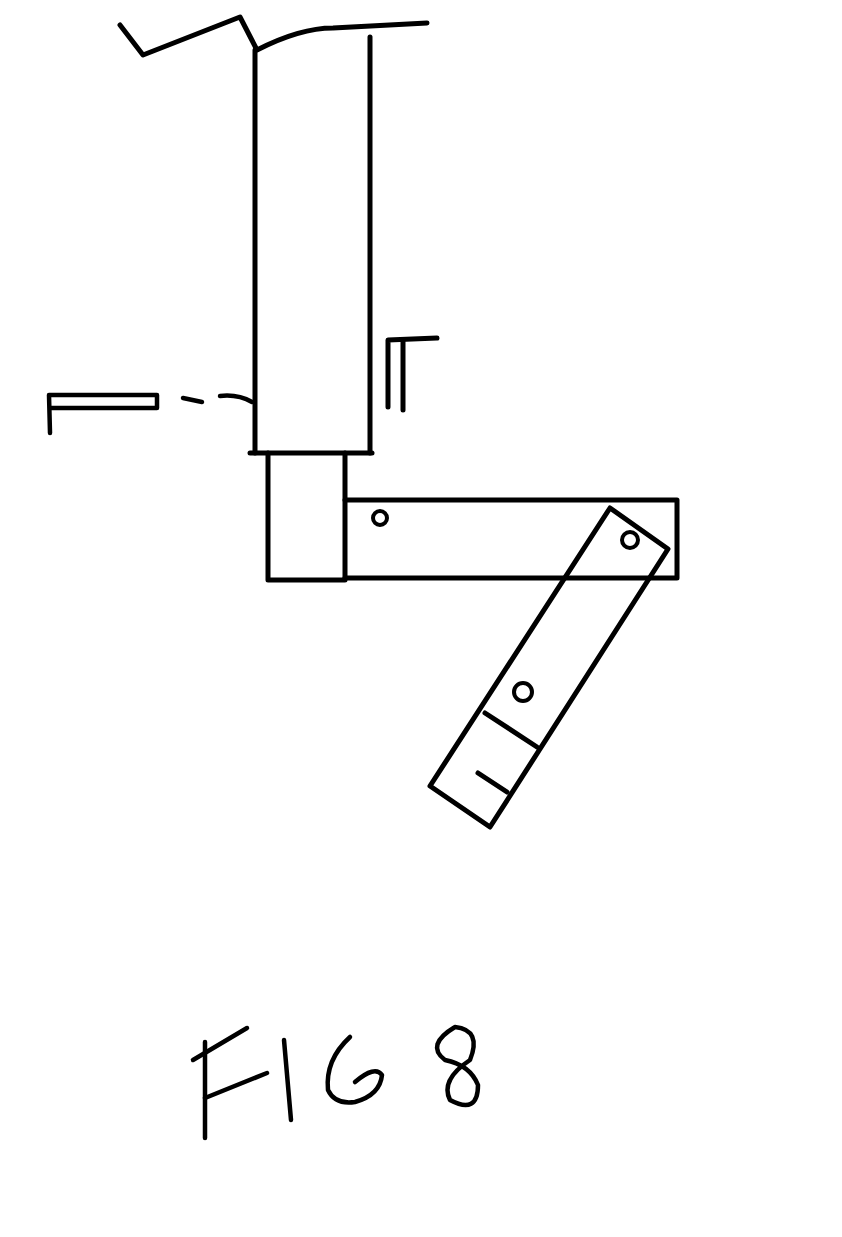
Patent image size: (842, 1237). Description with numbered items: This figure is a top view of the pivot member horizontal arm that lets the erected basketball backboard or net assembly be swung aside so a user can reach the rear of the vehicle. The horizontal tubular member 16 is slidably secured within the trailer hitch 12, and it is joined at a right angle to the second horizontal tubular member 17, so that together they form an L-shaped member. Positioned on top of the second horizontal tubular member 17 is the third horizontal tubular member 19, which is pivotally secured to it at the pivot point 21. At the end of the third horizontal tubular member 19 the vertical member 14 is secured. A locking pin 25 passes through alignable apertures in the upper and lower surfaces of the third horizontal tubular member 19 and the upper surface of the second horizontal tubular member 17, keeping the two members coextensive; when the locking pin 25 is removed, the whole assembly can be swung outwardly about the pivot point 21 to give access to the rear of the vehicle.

The trailer hitch 12 is at (285, 158).
The horizontal tubular member 16 is at (258, 518).
The second horizontal tubular member 17 is at (437, 555).
The third horizontal tubular member 19 is at (588, 648).
The pivot point 21 is at (650, 497).
The locking pin 25 is at (413, 325).
The vertical member 14 is at (518, 793).